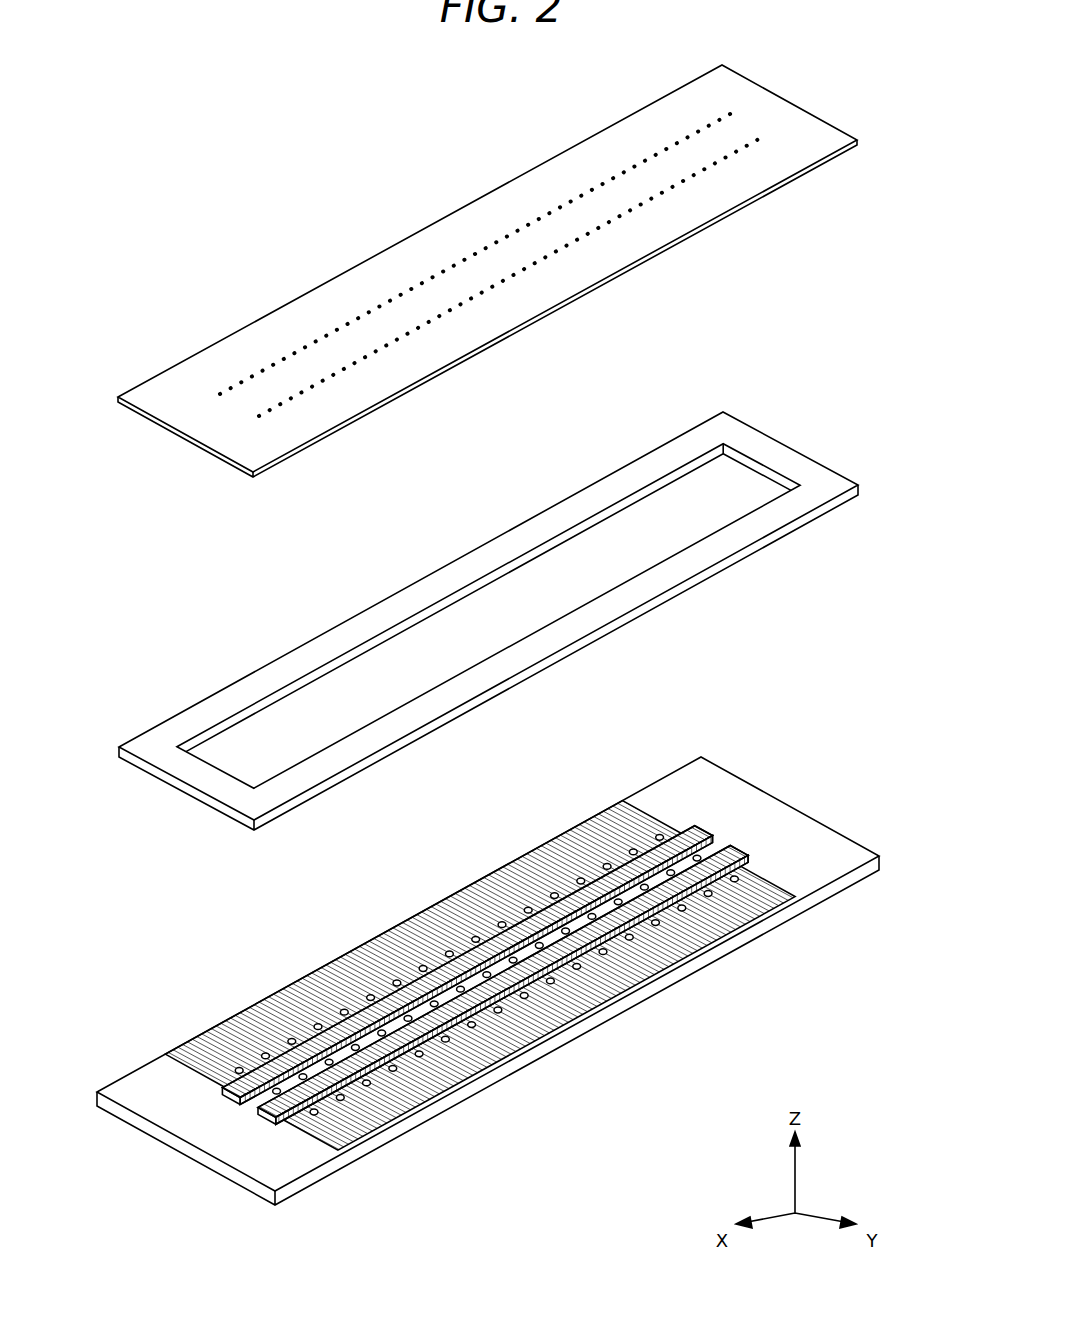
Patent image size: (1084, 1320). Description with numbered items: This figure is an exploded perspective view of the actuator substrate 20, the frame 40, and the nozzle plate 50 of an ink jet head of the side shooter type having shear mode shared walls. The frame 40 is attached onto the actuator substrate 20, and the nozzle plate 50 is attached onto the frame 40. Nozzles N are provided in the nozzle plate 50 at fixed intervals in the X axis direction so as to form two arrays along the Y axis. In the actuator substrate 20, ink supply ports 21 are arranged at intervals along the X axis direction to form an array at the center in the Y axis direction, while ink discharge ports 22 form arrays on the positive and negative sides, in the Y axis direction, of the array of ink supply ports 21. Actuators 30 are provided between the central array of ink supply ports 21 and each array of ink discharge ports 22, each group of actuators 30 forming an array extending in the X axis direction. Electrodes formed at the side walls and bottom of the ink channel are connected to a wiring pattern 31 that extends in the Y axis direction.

The actuator substrate 20 is at (148, 1082).
The ink supply port 21 is at (700, 856).
The ink discharge port 22 is at (660, 835).
The actuator 30 is at (712, 834).
The wiring pattern 31 is at (415, 925).
The frame 40 is at (149, 742).
The nozzle plate 50 is at (183, 378).
The nozzle N is at (249, 421).